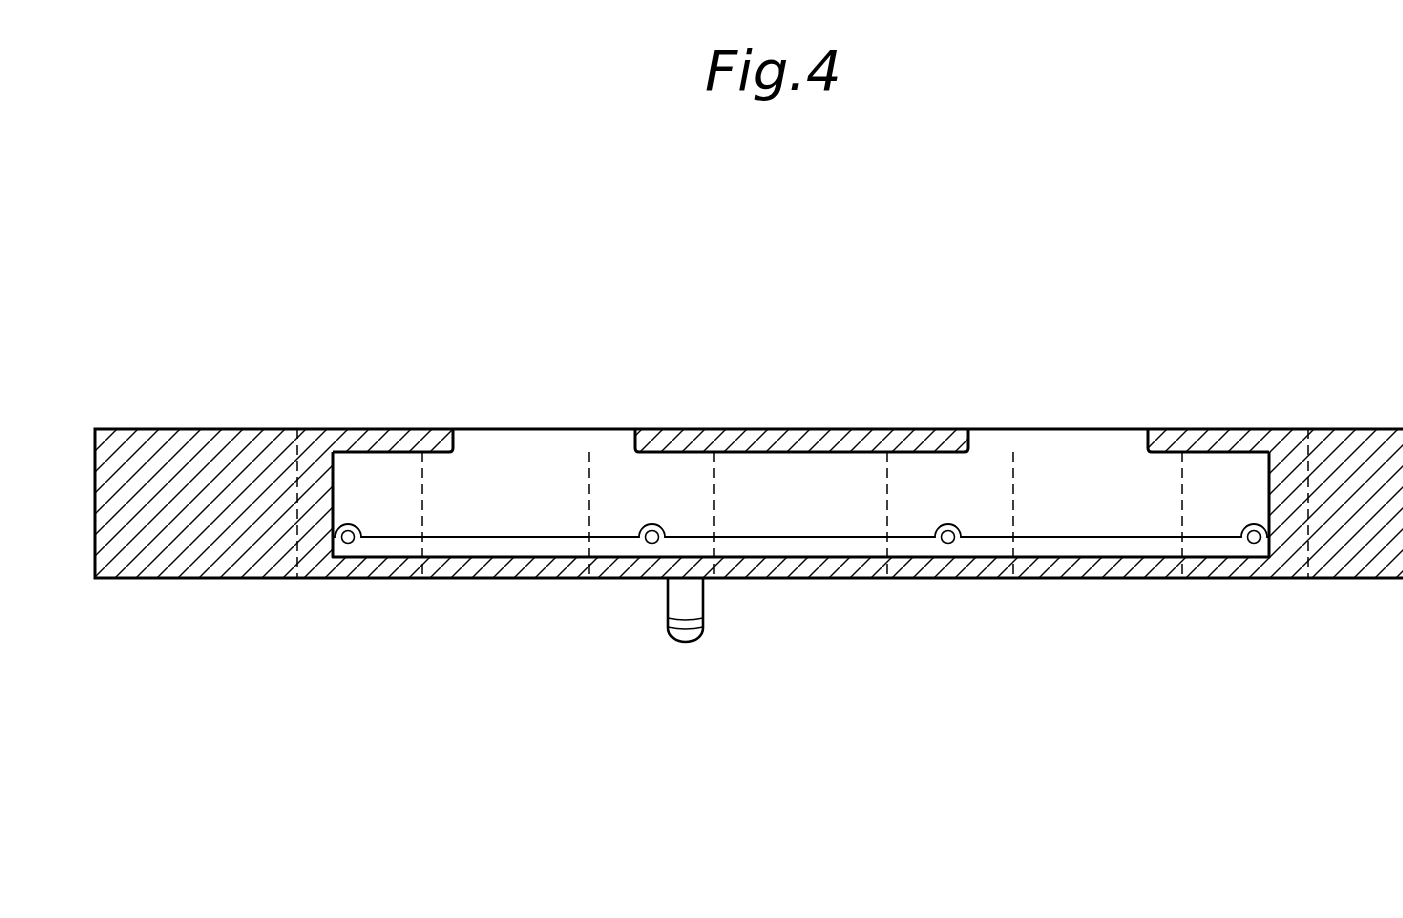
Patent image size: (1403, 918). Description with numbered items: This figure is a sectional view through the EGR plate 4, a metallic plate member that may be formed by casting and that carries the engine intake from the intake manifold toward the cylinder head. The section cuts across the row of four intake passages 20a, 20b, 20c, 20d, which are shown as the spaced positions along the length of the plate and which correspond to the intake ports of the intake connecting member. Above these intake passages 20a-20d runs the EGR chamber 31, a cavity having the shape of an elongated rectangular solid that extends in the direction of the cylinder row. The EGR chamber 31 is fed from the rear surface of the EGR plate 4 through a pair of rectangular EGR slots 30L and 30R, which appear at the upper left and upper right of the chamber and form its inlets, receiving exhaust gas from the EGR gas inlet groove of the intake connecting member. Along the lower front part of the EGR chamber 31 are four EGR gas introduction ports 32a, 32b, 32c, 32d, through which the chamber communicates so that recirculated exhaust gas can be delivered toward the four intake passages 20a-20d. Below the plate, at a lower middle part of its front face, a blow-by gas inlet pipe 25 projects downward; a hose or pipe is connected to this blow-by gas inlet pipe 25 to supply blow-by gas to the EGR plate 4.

The EGR plate 4 is at (1238, 298).
The intake passage 20a is at (297, 462).
The intake passage 20b is at (590, 456).
The intake passage 20c is at (1013, 456).
The intake passage 20d is at (1308, 458).
The blow-by gas inlet pipe 25 is at (692, 598).
The EGR slot 30L is at (463, 431).
The EGR slot 30R is at (1148, 432).
The EGR chamber 31 is at (345, 462).
The EGR gas introduction port 32a is at (350, 544).
The EGR gas introduction port 32b is at (653, 544).
The EGR gas introduction port 32c is at (950, 544).
The EGR gas introduction port 32d is at (1257, 544).